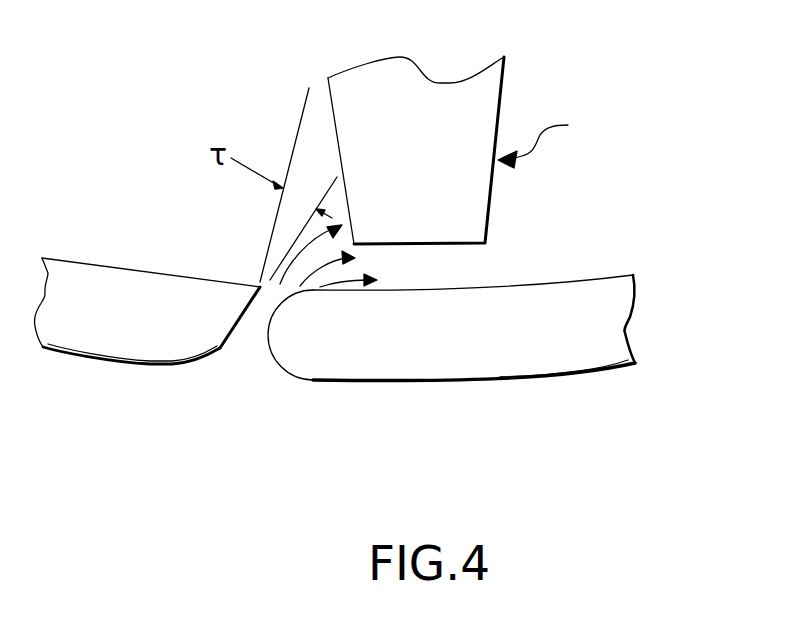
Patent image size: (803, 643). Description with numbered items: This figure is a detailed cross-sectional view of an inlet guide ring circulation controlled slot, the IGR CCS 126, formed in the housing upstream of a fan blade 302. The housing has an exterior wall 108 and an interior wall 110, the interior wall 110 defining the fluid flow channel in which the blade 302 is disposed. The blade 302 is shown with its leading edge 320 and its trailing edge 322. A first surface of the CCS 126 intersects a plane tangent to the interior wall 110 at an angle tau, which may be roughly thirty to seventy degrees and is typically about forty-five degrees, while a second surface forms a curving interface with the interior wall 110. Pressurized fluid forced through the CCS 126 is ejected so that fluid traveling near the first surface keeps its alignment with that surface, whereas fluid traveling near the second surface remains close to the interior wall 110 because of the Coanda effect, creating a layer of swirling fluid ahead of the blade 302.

The leading edge 320 is at (503, 85).
The trailing edge 322 is at (330, 98).
The blade 302 is at (559, 138).
The circulation controlled slot 126 is at (247, 338).
The interior wall 110 is at (575, 278).
The exterior wall 108 is at (590, 372).